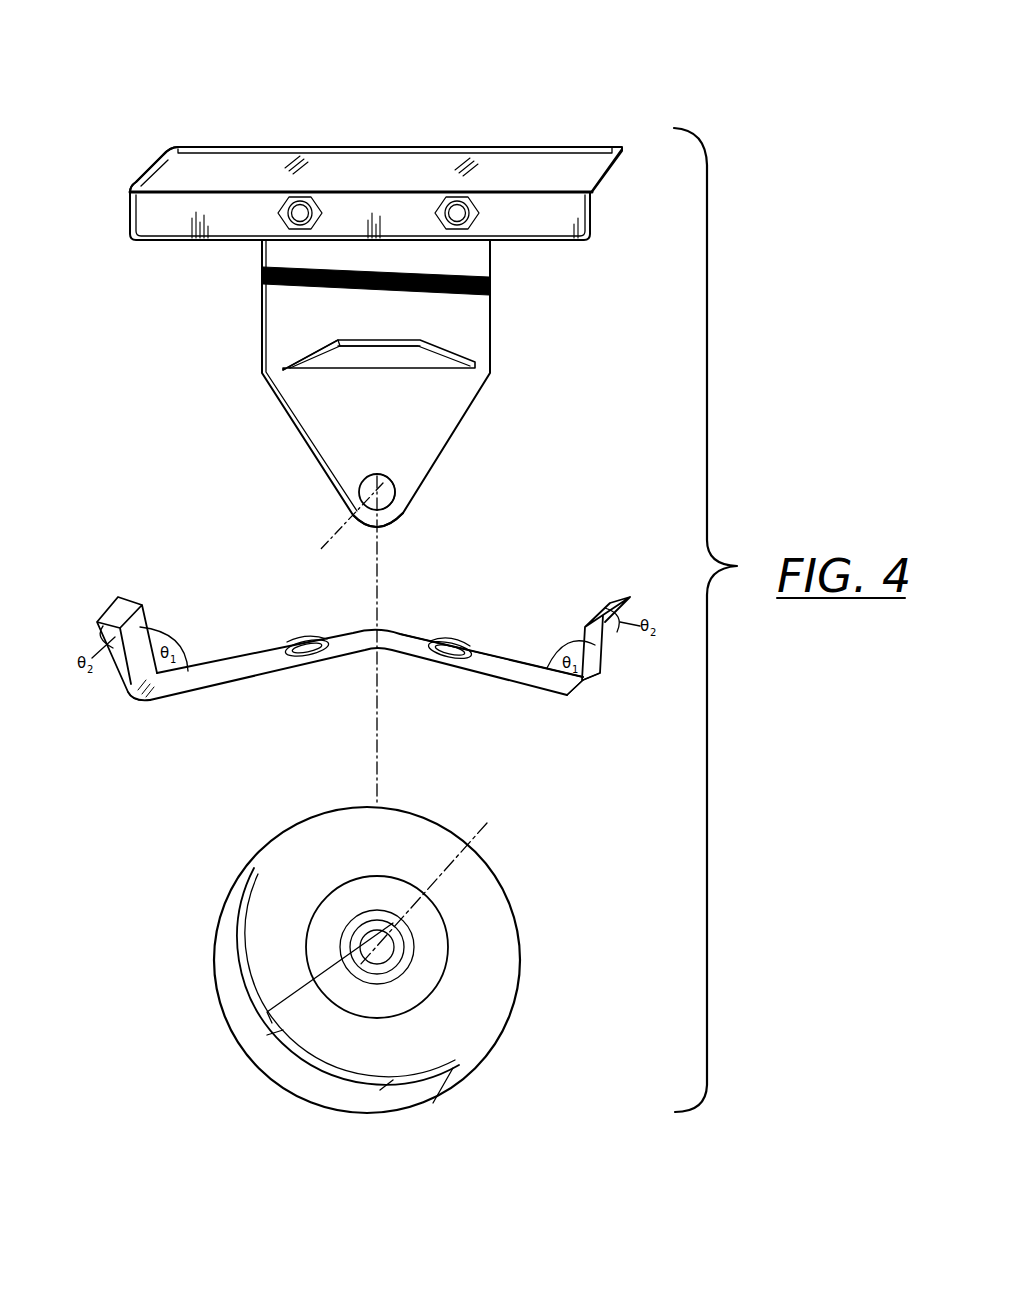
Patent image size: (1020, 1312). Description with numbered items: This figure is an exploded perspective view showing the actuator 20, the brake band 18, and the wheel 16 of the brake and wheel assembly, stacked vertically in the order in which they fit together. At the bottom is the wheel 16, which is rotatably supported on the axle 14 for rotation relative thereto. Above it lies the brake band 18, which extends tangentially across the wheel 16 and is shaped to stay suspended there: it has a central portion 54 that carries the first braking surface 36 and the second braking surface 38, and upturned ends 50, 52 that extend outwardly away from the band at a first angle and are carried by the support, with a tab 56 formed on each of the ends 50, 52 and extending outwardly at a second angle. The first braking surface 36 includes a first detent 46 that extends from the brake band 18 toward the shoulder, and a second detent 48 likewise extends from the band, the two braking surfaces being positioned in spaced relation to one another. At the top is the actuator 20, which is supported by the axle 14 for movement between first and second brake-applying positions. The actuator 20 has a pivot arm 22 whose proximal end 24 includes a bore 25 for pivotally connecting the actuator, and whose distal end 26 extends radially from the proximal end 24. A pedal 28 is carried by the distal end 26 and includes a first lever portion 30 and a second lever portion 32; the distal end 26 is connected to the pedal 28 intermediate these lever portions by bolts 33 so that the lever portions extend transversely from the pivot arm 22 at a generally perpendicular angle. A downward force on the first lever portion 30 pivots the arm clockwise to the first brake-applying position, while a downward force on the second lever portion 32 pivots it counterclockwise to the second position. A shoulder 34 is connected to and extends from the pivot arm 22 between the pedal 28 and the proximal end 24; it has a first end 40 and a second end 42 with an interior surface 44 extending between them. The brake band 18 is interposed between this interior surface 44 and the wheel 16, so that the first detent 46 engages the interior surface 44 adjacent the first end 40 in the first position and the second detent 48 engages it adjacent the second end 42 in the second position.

The axle 14 is at (272, 1030).
The wheel 16 is at (490, 1037).
The brake band 18 is at (508, 654).
The actuator 20 is at (606, 148).
The pivot arm 22 is at (262, 305).
The proximal end 24 is at (330, 497).
The bore 25 is at (390, 484).
The distal end 26 is at (490, 253).
The pedal 28 is at (400, 148).
The first lever portion 30 is at (558, 147).
The second lever portion 32 is at (192, 148).
The bolts 33 is at (302, 203).
The shoulder 34 is at (370, 340).
The first braking surface 36 is at (477, 647).
The second braking surface 38 is at (283, 646).
The first end 40 is at (447, 348).
The second end 42 is at (297, 348).
The interior surface 44 is at (407, 357).
The first detent 46 is at (454, 643).
The second detent 48 is at (303, 636).
The upturned end 50 is at (603, 661).
The upturned end 52 is at (127, 673).
The central portion 54 is at (398, 631).
The tab 56 is at (125, 597).